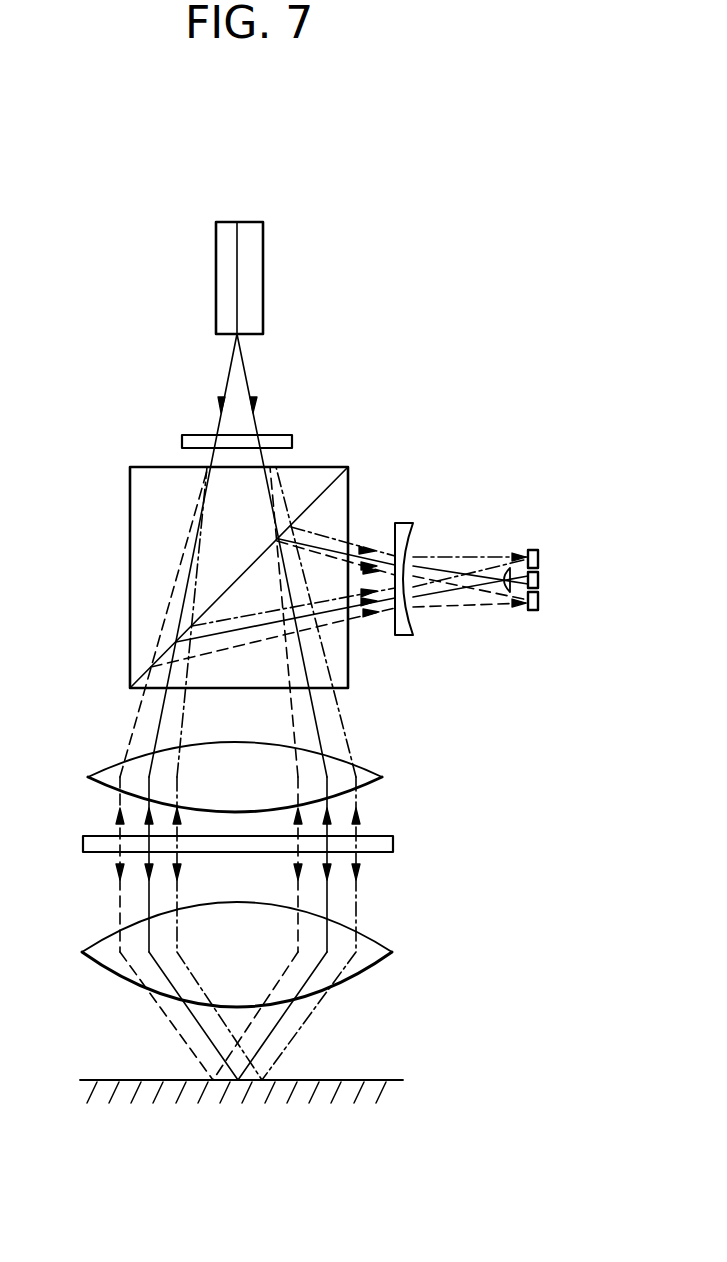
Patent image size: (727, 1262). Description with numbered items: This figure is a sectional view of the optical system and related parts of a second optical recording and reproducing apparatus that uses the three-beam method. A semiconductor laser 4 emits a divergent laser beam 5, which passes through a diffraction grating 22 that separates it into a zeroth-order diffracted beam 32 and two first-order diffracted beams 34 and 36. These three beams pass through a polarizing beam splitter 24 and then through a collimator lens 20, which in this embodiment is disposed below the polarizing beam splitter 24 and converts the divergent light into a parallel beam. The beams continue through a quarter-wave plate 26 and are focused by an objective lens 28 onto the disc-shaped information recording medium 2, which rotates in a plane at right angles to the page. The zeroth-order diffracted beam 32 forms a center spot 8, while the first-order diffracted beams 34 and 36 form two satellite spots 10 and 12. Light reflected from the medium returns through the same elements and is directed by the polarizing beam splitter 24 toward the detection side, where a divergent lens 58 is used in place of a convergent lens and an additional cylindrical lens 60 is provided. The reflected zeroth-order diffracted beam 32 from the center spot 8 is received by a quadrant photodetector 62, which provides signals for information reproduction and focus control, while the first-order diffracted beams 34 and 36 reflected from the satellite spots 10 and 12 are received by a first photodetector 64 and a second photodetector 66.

The information recording medium 2 is at (395, 1092).
The semiconductor laser 4 is at (265, 283).
The laser beam 5 is at (250, 383).
The center spot 8 is at (238, 1083).
The satellite spot 10 is at (213, 1082).
The satellite spot 12 is at (262, 1083).
The collimator lens 20 is at (382, 778).
The diffraction grating 22 is at (292, 437).
The polarizing beam splitter 24 is at (342, 503).
The quarter-wave plate 26 is at (393, 840).
The objective lens 28 is at (393, 950).
The zeroth-order diffracted beam 32 is at (160, 712).
The first-order diffracted beam 34 is at (132, 732).
The first-order diffracted beam 36 is at (180, 728).
The divergent lens 58 is at (405, 635).
The cylindrical lens 60 is at (503, 592).
The quadrant photodetector 62 is at (538, 580).
The first photodetector 64 is at (538, 600).
The second photodetector 66 is at (538, 562).